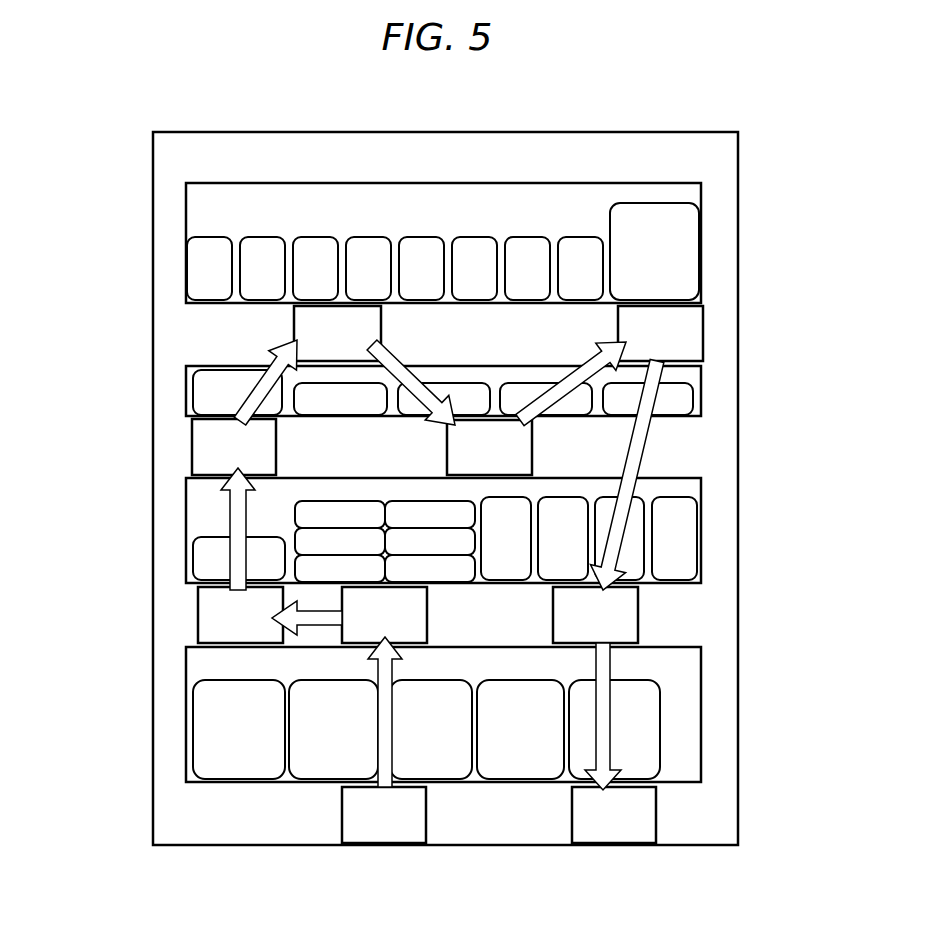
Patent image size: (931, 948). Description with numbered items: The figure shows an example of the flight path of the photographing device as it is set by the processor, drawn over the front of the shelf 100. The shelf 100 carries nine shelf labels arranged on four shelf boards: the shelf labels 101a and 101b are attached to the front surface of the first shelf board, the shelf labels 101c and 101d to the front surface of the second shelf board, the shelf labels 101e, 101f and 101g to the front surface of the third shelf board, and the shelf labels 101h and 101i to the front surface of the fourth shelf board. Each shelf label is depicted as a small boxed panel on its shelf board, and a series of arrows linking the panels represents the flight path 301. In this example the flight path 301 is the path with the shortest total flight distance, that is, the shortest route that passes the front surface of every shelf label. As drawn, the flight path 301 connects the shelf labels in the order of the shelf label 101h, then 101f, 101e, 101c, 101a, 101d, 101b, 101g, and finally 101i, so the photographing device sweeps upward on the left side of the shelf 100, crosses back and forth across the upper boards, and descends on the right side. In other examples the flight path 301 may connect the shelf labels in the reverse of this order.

The shelf 100 is at (363, 131).
The shelf label 101a is at (294, 327).
The shelf label 101b is at (703, 338).
The shelf label 101c is at (192, 454).
The shelf label 101d is at (532, 458).
The shelf label 101e is at (198, 612).
The shelf label 101f is at (410, 643).
The shelf label 101g is at (638, 608).
The shelf label 101h is at (362, 843).
The shelf label 101i is at (597, 843).
The flight path 301 is at (378, 722).